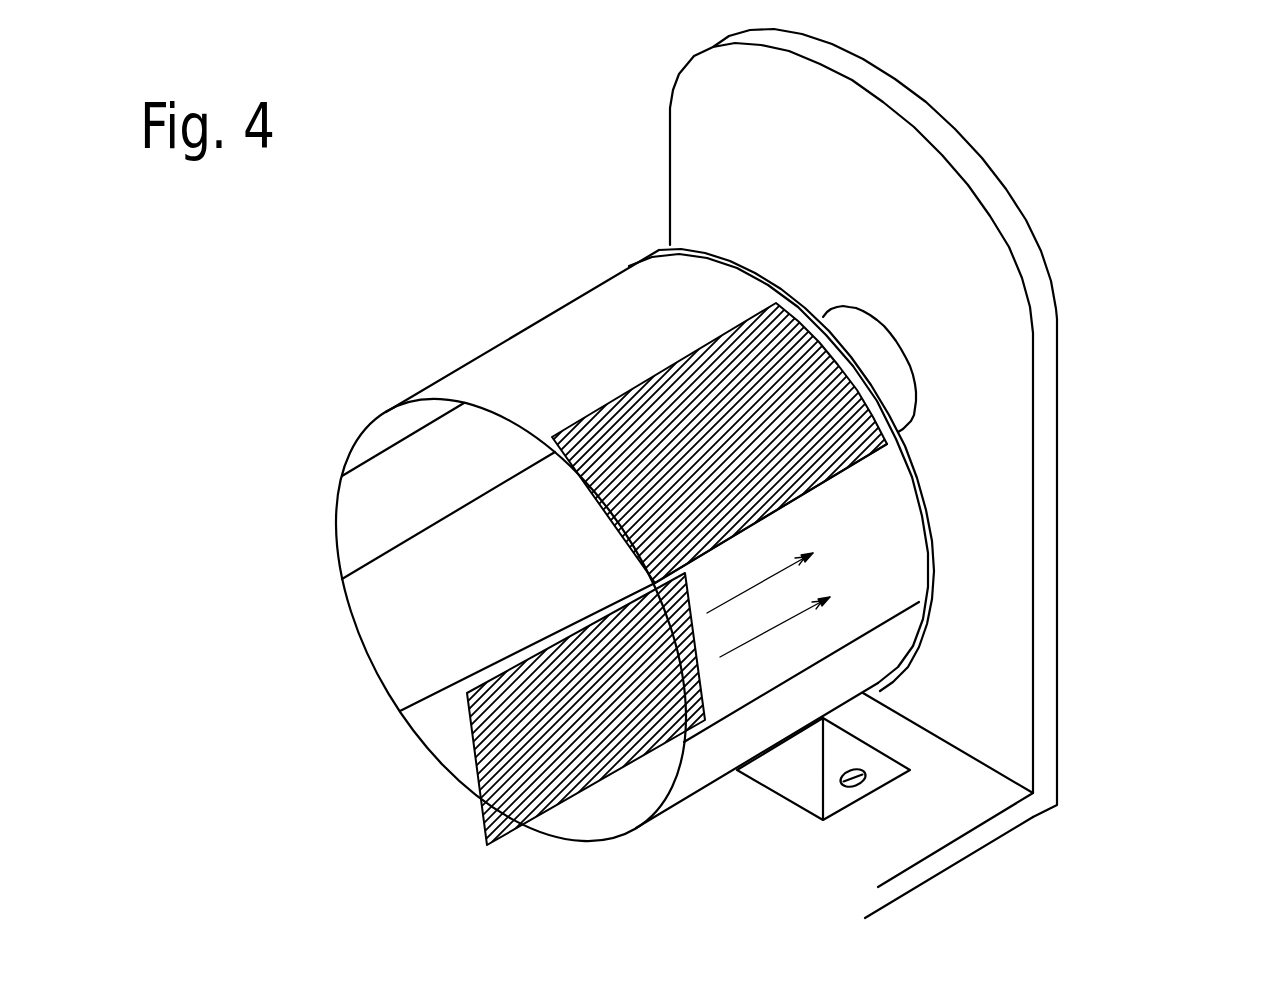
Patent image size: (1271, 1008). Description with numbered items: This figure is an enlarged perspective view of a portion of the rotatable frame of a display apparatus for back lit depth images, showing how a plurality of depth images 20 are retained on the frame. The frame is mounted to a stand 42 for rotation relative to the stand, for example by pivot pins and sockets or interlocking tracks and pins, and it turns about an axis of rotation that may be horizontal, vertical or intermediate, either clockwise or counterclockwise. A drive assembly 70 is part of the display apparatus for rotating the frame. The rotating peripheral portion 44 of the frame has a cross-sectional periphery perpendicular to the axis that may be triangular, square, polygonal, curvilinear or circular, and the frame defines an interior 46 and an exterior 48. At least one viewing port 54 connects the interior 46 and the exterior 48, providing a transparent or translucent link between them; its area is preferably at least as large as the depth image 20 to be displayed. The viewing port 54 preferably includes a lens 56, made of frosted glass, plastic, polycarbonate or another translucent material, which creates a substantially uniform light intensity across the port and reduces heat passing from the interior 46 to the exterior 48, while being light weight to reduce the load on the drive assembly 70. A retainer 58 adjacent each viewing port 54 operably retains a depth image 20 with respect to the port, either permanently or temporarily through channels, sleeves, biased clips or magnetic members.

The depth image 20 is at (652, 418).
The stand 42 is at (988, 195).
The peripheral portion 44 is at (750, 548).
The interior 46 is at (450, 594).
The exterior 48 is at (567, 201).
The viewing port 54 is at (850, 478).
The lens 56 is at (839, 575).
The retainer 58 is at (723, 705).
The drive assembly 70 is at (890, 363).